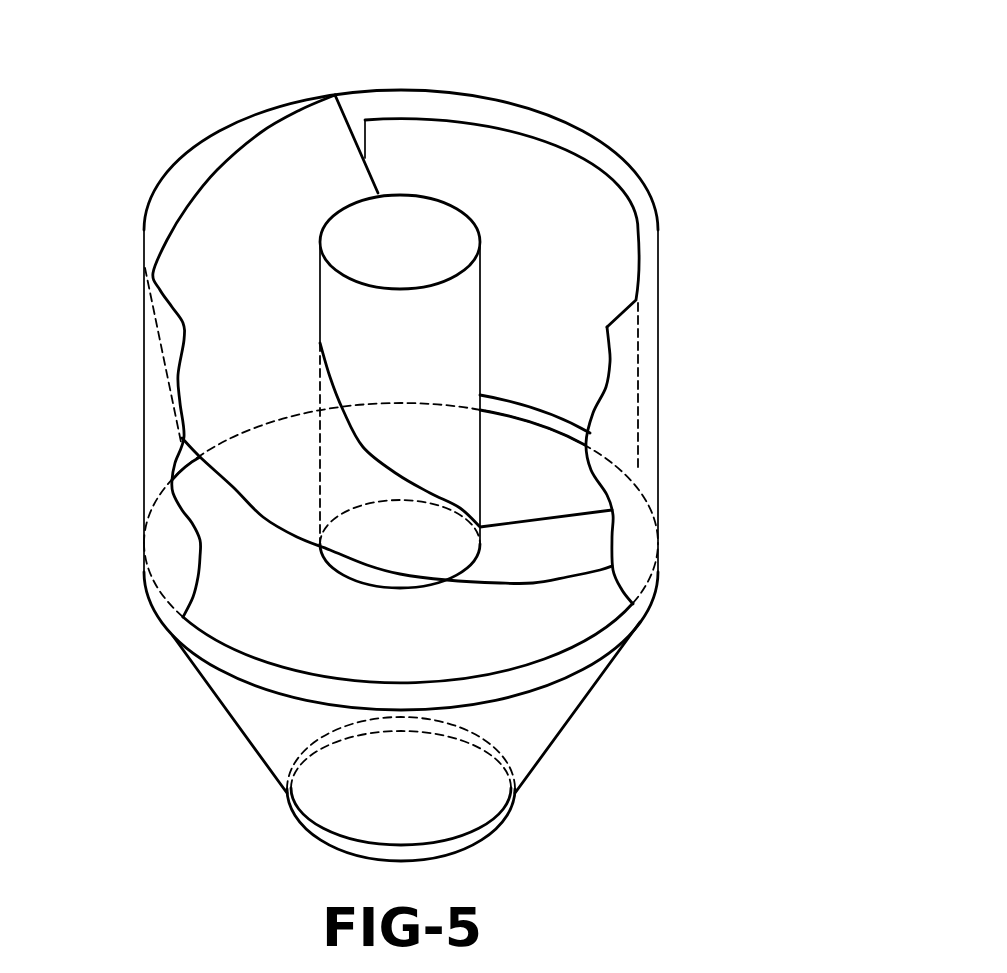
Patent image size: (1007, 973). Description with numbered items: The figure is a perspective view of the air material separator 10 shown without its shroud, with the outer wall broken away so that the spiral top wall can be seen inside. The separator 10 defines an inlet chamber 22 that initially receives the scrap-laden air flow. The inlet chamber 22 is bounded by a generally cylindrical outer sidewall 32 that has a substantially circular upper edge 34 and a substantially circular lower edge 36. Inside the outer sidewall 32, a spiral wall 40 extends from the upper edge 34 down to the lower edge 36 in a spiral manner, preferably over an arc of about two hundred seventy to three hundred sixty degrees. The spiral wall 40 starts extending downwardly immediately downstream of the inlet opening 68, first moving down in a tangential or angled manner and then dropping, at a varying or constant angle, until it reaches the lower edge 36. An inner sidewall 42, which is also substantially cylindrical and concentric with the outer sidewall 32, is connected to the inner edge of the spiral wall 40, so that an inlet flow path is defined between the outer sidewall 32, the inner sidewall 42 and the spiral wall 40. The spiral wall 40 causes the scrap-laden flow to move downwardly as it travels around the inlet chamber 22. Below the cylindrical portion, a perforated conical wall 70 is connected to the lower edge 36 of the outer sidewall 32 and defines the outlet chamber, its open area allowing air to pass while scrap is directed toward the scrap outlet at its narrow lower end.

The air material separator 10 is at (178, 76).
The inlet chamber 22 is at (143, 278).
The outer sidewall 32 is at (603, 160).
The upper edge 34 is at (547, 116).
The lower edge 36 is at (590, 420).
The spiral wall 40 is at (217, 387).
The inner sidewall 42 is at (453, 305).
The inlet opening 68 is at (468, 153).
The perforated conical wall 70 is at (533, 733).